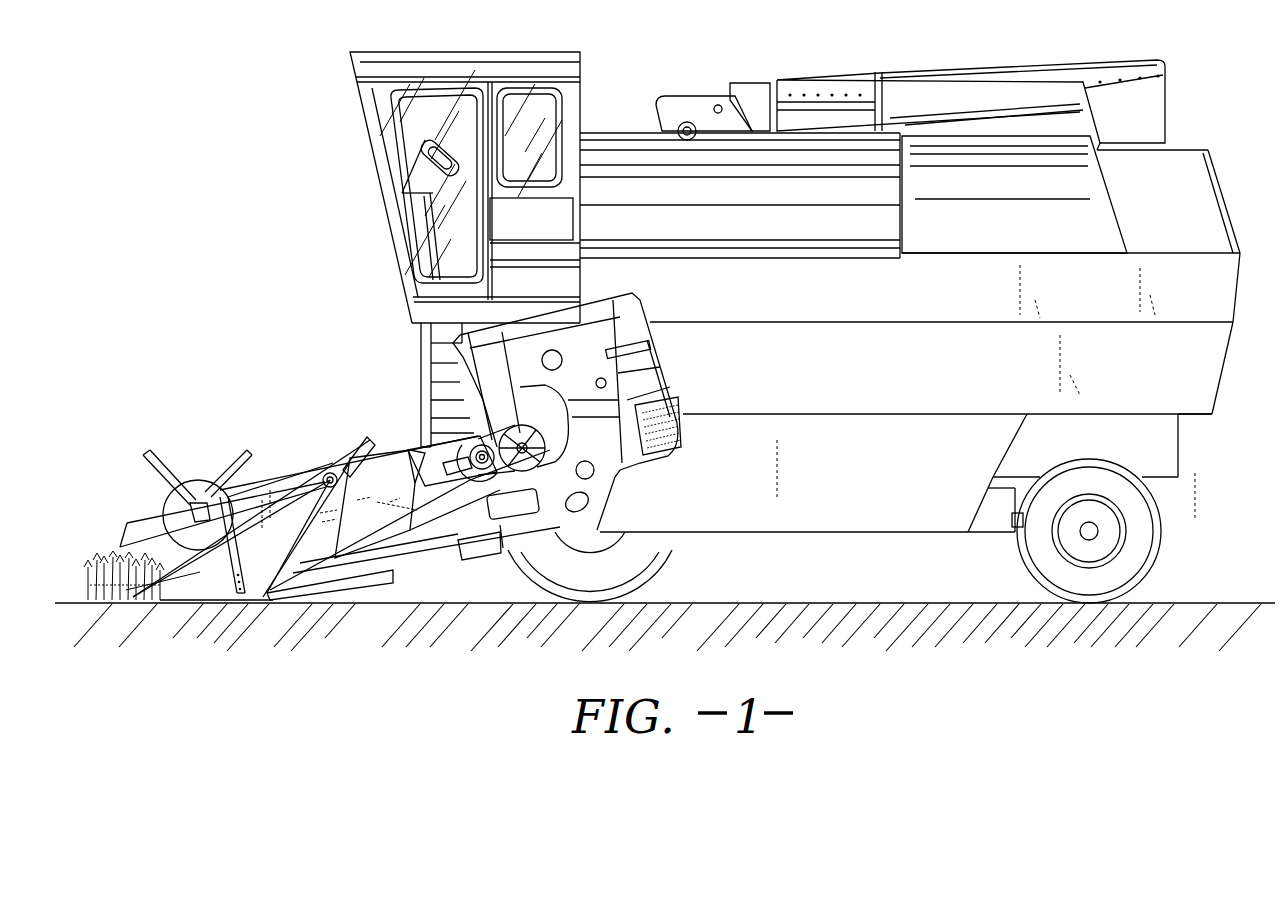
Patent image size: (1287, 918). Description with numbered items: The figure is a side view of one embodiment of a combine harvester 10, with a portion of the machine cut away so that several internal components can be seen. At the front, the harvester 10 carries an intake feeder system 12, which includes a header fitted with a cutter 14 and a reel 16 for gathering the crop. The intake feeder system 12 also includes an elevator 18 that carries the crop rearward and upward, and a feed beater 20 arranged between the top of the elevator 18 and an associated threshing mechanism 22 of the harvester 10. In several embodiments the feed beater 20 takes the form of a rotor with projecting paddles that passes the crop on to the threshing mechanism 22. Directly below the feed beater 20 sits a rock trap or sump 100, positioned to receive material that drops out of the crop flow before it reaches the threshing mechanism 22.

The combine harvester 10 is at (343, 175).
The intake feeder system 12 is at (253, 373).
The cutter 14 is at (110, 613).
The reel 16 is at (223, 467).
The elevator 18 is at (338, 463).
The feed beater 20 is at (427, 405).
The threshing mechanism 22 is at (662, 453).
The rock trap or sump 100 is at (498, 558).